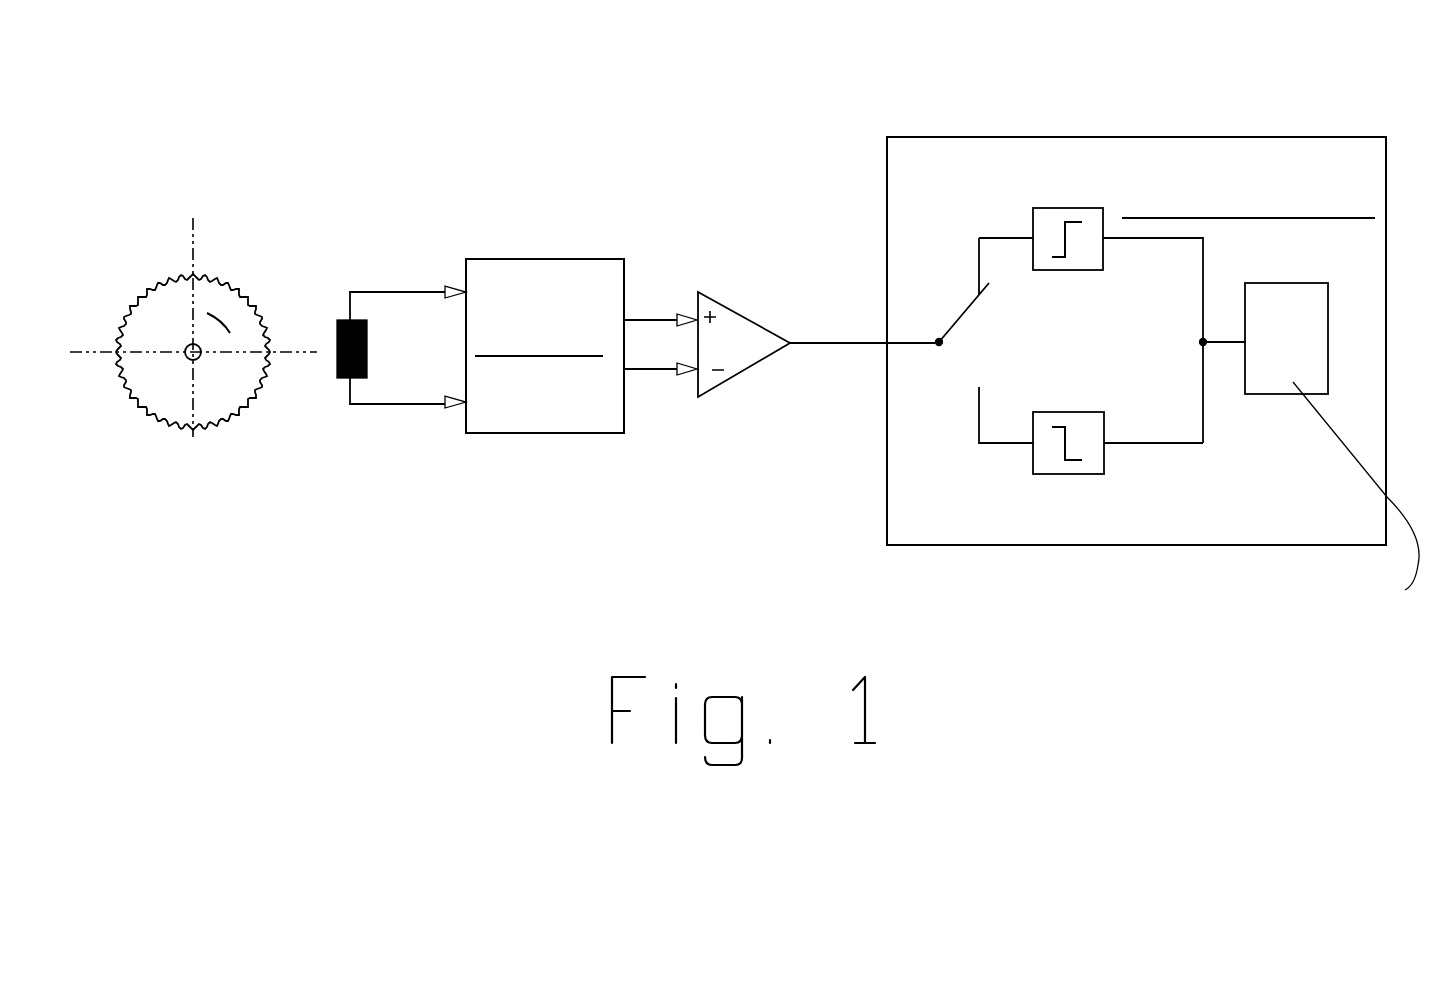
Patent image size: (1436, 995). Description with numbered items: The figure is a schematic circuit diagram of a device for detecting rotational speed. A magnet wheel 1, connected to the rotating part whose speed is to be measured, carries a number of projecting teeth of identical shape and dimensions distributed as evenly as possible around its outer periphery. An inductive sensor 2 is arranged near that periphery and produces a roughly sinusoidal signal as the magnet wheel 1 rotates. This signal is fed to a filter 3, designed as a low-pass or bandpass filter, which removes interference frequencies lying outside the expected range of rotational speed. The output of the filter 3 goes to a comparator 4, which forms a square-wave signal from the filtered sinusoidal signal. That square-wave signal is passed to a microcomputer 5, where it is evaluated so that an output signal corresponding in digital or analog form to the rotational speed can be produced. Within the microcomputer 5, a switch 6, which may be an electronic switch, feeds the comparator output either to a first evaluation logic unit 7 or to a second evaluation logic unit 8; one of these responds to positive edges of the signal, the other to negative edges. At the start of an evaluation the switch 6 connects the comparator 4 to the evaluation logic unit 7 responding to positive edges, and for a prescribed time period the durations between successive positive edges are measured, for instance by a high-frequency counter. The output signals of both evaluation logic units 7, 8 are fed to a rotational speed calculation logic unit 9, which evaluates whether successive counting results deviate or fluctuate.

The magnet wheel 1 is at (238, 317).
The inductive sensor 2 is at (367, 342).
The filter 3 is at (553, 283).
The comparator 4 is at (742, 338).
The microcomputer 5 is at (1187, 162).
The switch 6 is at (960, 313).
The first evaluation logic unit 7 is at (1093, 225).
The second evaluation logic unit 8 is at (1093, 456).
The rotational speed calculation logic unit 9 is at (1290, 313).